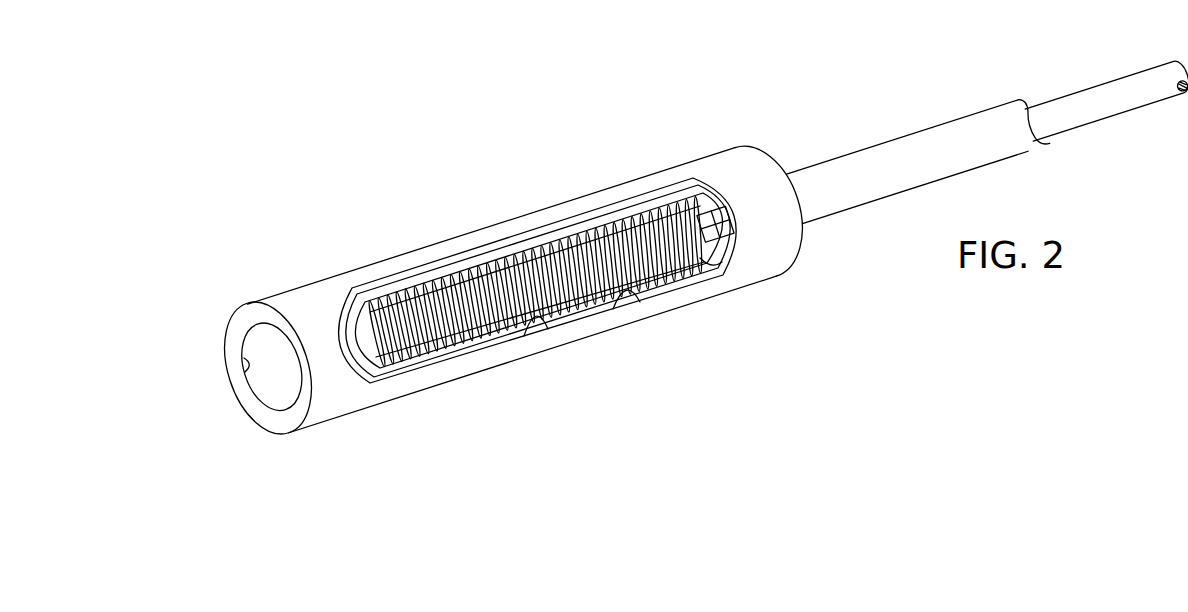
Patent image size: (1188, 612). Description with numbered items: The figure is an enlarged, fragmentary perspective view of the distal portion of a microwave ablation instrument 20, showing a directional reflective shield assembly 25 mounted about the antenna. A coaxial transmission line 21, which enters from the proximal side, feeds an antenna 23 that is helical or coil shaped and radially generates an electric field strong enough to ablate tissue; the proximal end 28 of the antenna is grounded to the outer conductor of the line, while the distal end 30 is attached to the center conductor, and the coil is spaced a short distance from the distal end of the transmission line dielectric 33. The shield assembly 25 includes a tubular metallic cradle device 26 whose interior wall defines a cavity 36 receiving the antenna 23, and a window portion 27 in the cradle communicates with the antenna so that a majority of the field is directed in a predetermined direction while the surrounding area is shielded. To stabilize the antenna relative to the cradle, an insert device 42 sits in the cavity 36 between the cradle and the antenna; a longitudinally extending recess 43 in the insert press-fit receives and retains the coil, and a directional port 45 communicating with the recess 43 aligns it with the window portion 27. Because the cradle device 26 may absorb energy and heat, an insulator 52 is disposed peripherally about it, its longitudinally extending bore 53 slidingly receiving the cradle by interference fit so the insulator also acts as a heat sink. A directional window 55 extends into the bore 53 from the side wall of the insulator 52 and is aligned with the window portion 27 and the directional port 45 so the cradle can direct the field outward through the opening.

The microwave ablation instrument 20 is at (880, 117).
The transmission line 21 is at (1107, 83).
The antenna 23 is at (447, 285).
The shield assembly 25 is at (657, 156).
The cradle device 26 is at (738, 221).
The window portion 27 is at (705, 265).
The proximal end 28 is at (690, 188).
The distal end 30 is at (347, 303).
The transmission line dielectric 33 is at (720, 233).
The cavity 36 is at (524, 336).
The insert device 42 is at (558, 240).
The recess 43 is at (712, 203).
The directional port 45 is at (495, 274).
The insulator 52 is at (397, 403).
The bore 53 is at (250, 373).
The directional window 55 is at (613, 309).